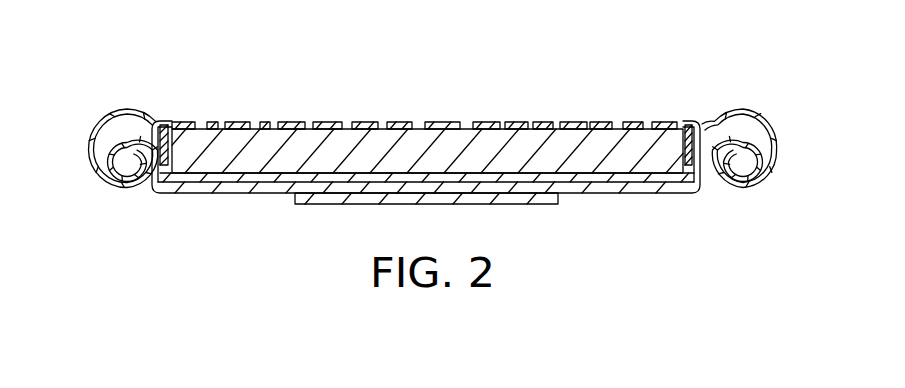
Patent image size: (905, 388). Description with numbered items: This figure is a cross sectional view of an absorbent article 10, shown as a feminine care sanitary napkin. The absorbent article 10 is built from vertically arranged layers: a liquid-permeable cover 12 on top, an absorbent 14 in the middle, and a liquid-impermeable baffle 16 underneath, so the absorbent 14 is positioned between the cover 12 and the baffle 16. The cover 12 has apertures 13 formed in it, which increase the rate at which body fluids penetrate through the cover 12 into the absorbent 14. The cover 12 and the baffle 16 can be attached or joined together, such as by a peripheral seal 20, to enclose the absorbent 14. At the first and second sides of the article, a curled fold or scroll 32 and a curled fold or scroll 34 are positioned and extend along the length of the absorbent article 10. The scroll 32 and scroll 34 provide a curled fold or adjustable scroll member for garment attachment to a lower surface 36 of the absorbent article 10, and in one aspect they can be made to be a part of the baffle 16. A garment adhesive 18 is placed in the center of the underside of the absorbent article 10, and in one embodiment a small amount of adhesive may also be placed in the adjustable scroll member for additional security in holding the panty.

The absorbent article 10 is at (388, 74).
The liquid-permeable cover 12 is at (183, 121).
The apertures 13 is at (255, 122).
The absorbent 14 is at (457, 161).
The liquid-impermeable baffle 16 is at (583, 195).
The garment adhesive 18 is at (455, 205).
The peripheral seal 20 is at (156, 170).
The scroll 32 is at (108, 118).
The scroll 34 is at (763, 118).
The lower surface 36 is at (243, 195).